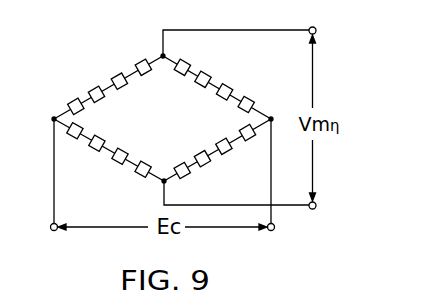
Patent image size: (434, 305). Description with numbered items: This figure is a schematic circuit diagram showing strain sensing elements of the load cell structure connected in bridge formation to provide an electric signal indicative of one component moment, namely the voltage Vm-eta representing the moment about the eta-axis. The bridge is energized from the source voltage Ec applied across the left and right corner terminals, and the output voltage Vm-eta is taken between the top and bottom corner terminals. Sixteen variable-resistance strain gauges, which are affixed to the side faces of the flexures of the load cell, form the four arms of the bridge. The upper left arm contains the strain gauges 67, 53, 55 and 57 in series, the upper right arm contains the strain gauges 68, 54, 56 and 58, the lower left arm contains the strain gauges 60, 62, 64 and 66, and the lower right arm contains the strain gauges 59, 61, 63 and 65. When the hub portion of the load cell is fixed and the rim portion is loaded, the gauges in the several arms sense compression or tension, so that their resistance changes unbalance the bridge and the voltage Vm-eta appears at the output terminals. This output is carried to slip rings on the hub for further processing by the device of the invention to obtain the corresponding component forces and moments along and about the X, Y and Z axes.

The strain gauge 53 is at (93, 79).
The strain gauge 54 is at (211, 66).
The strain gauge 55 is at (116, 66).
The strain gauge 56 is at (234, 77).
The strain gauge 57 is at (139, 53).
The strain gauge 58 is at (258, 89).
The strain gauge 59 is at (191, 185).
The strain gauge 60 is at (70, 146).
The strain gauge 61 is at (211, 173).
The strain gauge 62 is at (92, 155).
The strain gauge 63 is at (232, 160).
The strain gauge 64 is at (115, 172).
The strain gauge 65 is at (254, 146).
The strain gauge 66 is at (139, 185).
The strain gauge 67 is at (70, 90).
The strain gauge 68 is at (188, 53).